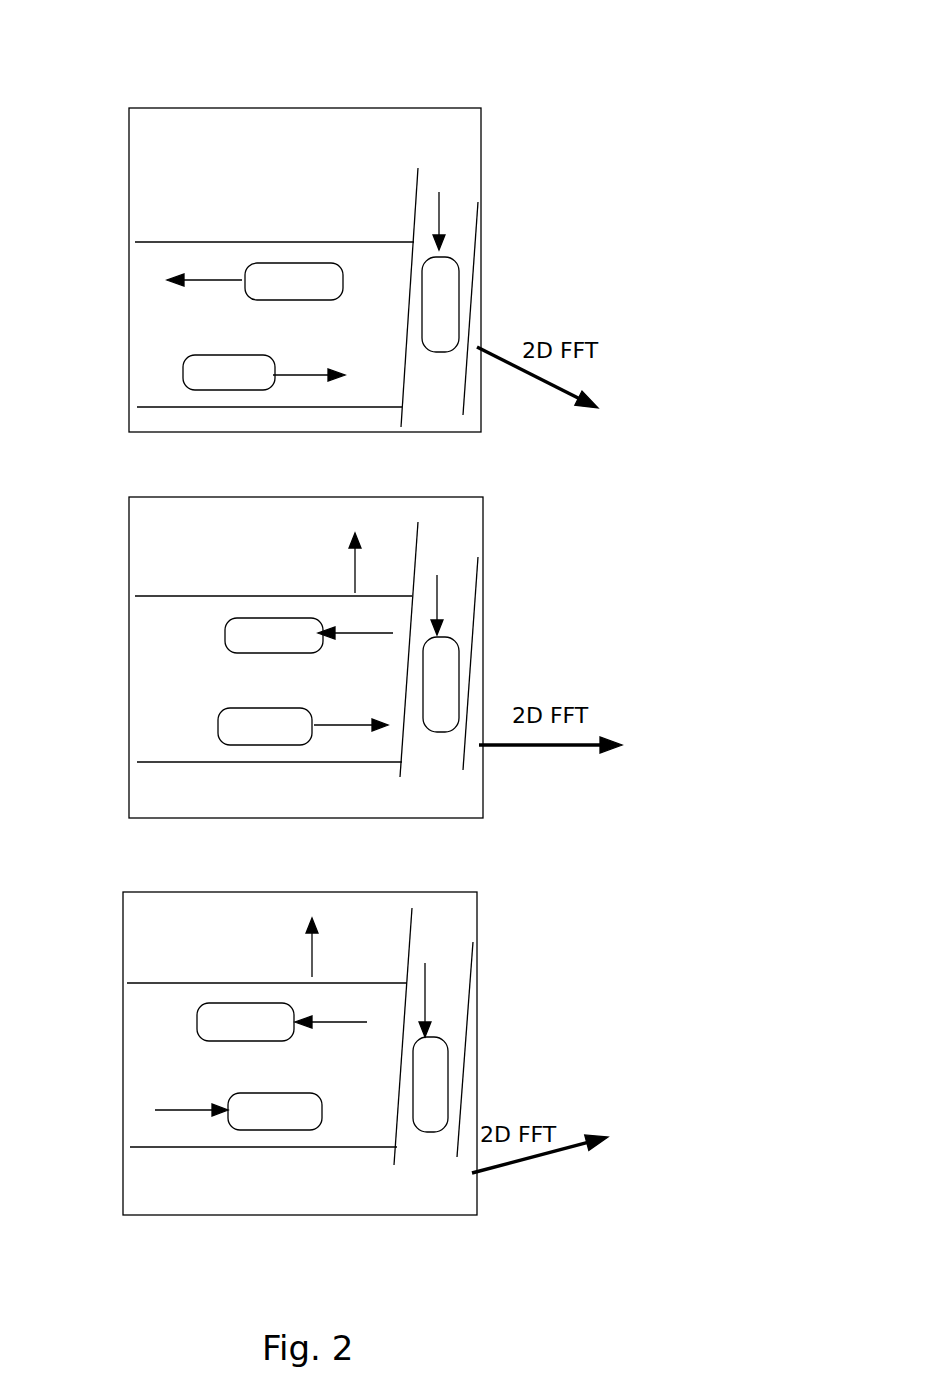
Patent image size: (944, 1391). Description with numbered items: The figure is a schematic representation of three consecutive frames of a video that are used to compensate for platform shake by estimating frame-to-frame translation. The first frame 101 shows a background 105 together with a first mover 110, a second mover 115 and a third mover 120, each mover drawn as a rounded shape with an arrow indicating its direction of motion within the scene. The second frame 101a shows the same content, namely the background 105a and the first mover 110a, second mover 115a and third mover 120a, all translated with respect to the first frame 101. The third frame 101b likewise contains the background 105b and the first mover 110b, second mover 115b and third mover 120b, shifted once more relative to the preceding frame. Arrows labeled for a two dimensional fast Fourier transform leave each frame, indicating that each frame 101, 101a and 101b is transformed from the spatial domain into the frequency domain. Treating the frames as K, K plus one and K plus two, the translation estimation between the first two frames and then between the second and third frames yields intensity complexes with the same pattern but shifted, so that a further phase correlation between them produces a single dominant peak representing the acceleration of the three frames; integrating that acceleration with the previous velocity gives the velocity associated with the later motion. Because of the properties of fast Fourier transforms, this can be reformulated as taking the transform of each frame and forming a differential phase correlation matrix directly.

The first frame 101 is at (320, 107).
The background 105 is at (417, 178).
The first mover 110 is at (276, 263).
The second mover 115 is at (210, 383).
The third mover 120 is at (455, 280).
The second frame 101a is at (227, 495).
The background 105a is at (418, 540).
The first mover 110a is at (230, 617).
The second mover 115a is at (217, 722).
The third mover 120a is at (447, 635).
The third frame 101b is at (305, 890).
The background 105b is at (410, 925).
The first mover 110b is at (238, 1002).
The second mover 115b is at (271, 1125).
The third mover 120b is at (447, 1060).